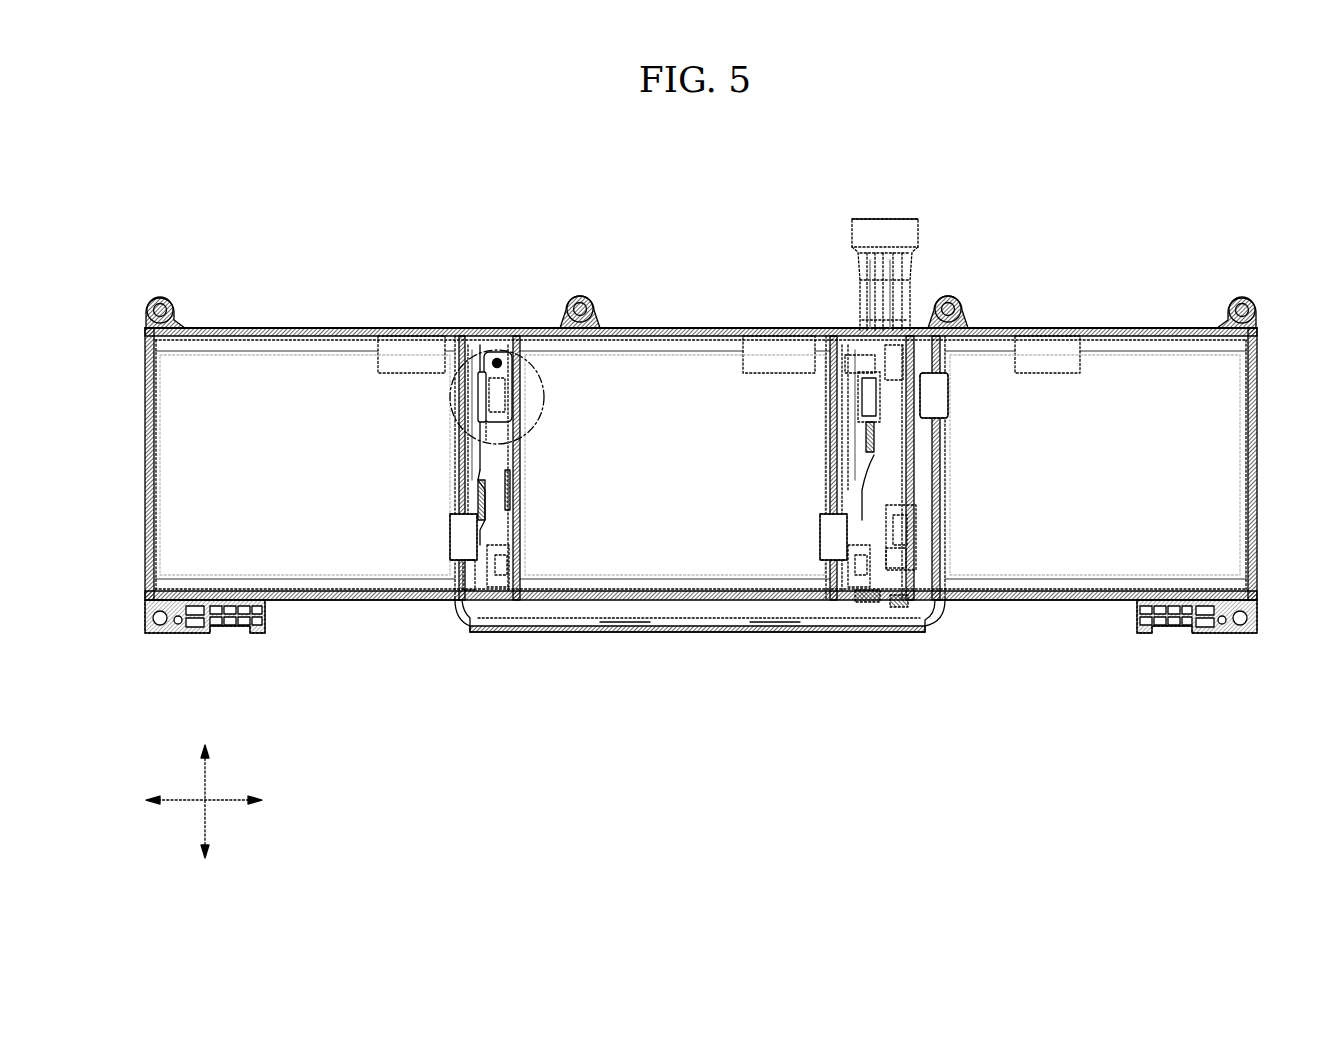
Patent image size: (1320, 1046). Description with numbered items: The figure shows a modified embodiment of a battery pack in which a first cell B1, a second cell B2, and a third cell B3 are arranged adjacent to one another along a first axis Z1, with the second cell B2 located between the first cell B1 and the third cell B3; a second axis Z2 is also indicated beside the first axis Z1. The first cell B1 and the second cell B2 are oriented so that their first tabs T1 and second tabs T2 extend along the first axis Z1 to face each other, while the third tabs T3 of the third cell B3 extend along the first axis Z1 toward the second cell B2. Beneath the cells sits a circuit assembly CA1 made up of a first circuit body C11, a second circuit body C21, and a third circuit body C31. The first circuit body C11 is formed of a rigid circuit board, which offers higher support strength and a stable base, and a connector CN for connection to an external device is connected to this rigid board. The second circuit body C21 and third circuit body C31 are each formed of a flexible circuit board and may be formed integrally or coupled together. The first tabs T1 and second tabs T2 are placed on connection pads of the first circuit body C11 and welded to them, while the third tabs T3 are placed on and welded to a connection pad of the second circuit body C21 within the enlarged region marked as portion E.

The first cell B1 is at (1125, 390).
The second cell B2 is at (685, 390).
The third cell B3 is at (318, 390).
The portion E is at (499, 345).
The first tabs T1 is at (903, 533).
The second tabs T2 is at (867, 390).
The third tabs T3 is at (500, 565).
The first circuit body C11 is at (872, 535).
The second circuit body C21 is at (500, 535).
The third circuit body C31 is at (688, 612).
The circuit assembly CA1 is at (805, 705).
The connector CN is at (885, 218).
The first axis Z1 is at (217, 801).
The second axis Z2 is at (205, 788).